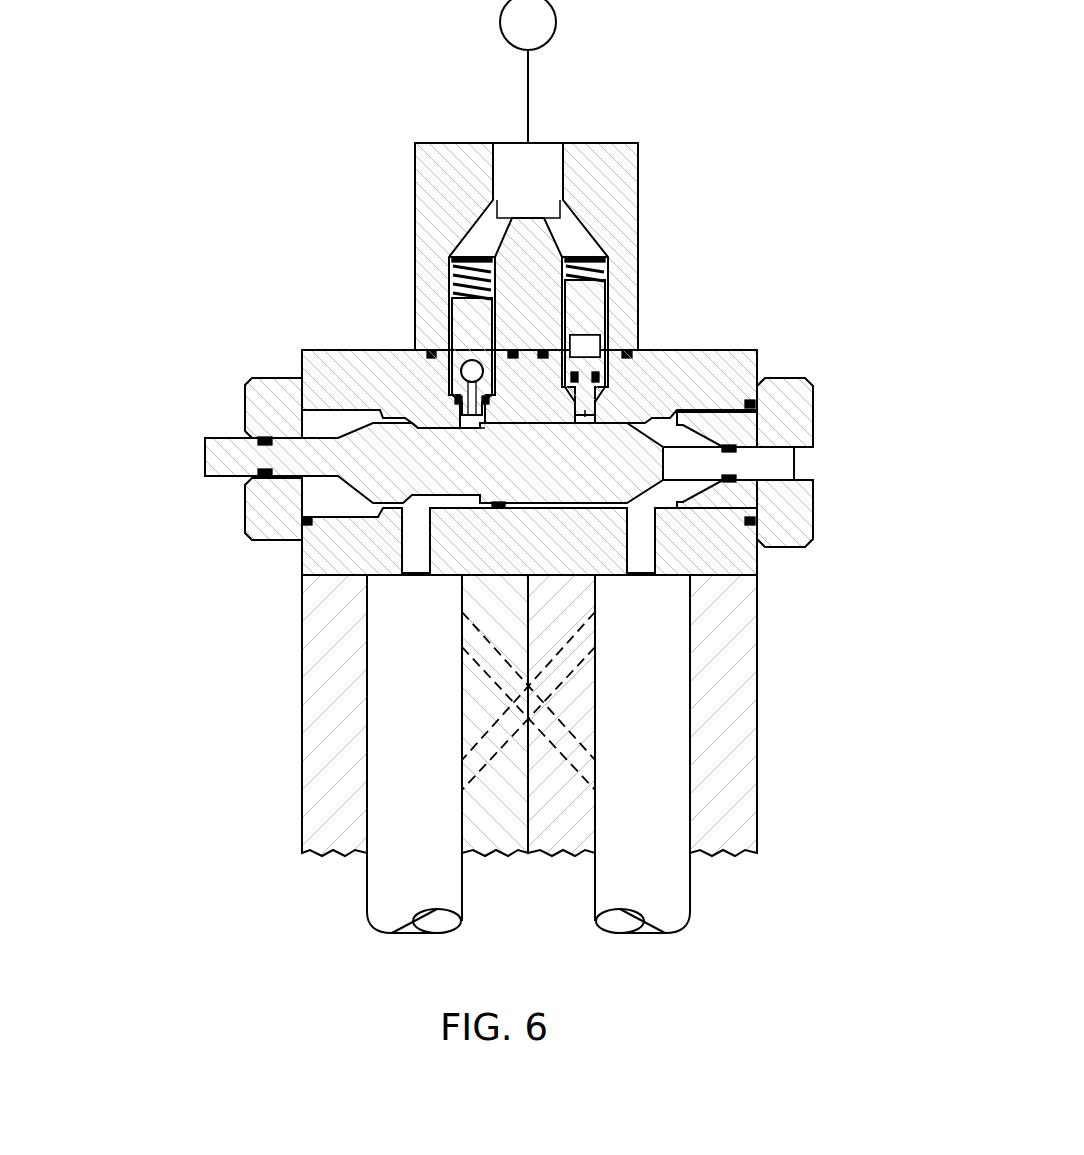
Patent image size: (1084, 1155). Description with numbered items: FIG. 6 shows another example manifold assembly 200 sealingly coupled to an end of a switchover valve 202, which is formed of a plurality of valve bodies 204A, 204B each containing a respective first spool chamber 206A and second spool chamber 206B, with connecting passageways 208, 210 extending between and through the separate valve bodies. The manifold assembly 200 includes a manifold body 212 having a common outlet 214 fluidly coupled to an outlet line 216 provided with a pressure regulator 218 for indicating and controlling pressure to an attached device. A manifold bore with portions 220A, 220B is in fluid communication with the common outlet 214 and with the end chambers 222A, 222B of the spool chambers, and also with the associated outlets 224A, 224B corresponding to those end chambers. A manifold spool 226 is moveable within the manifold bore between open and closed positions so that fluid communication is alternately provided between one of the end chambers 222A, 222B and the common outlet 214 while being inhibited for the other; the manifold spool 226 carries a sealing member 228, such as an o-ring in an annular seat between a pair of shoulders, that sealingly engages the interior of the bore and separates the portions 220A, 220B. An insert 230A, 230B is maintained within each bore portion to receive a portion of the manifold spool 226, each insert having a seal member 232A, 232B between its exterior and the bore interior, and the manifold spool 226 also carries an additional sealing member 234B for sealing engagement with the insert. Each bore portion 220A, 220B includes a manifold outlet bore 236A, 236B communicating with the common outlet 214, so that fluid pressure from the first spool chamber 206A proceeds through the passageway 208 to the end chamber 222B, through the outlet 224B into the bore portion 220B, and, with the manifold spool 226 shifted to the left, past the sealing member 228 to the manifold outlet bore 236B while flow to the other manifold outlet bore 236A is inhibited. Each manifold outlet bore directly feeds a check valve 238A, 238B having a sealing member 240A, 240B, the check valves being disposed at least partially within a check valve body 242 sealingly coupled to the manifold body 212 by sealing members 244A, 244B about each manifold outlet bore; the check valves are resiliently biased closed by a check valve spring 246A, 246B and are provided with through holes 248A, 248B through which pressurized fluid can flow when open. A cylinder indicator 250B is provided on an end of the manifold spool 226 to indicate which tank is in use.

The manifold assembly 200 is at (502, 484).
The switchover valve 202 is at (529, 738).
The valve body 204A is at (302, 772).
The valve body 204B is at (757, 772).
The first spool chamber 206A is at (375, 761).
The second spool chamber 206B is at (686, 761).
The connecting passageway 208 is at (480, 745).
The connecting passageway 210 is at (480, 667).
The manifold body 212 is at (750, 349).
The common outlet 214 is at (551, 144).
The outlet line 216 is at (530, 72).
The pressure regulator 218 is at (554, 20).
The manifold bore portion 220A is at (381, 370).
The manifold bore portion 220B is at (676, 367).
The end chamber 222A is at (315, 619).
The end chamber 222B is at (744, 620).
The outlet 224A is at (327, 540).
The outlet 224B is at (733, 542).
The manifold spool 226 is at (640, 440).
The sealing member 228 is at (497, 510).
The insert 230A is at (250, 388).
The insert 230B is at (812, 397).
The seal member 232A is at (266, 437).
The seal member 232B is at (756, 405).
The sealing member 234B is at (266, 477).
The manifold outlet bore 236A is at (462, 455).
The manifold outlet bore 236B is at (580, 446).
The check valve 238A is at (450, 300).
The check valve 238B is at (600, 287).
The sealing member 240A is at (486, 404).
The sealing member 240B is at (573, 378).
The check valve body 242 is at (640, 173).
The sealing member 244A is at (433, 350).
The sealing member 244B is at (618, 330).
The check valve spring 246A is at (455, 255).
The check valve spring 246B is at (608, 255).
The through hole 248A is at (516, 365).
The through hole 248B is at (552, 311).
The cylinder indicator 250B is at (502, 464).